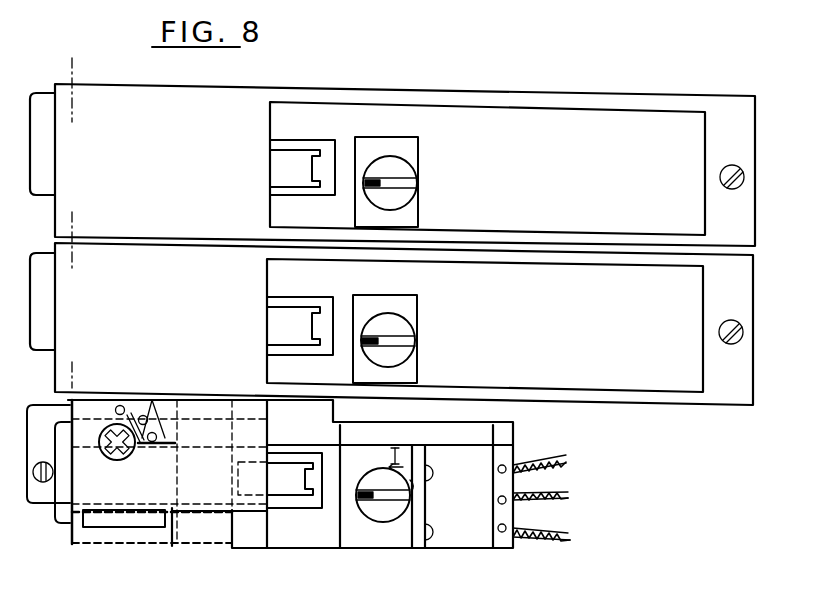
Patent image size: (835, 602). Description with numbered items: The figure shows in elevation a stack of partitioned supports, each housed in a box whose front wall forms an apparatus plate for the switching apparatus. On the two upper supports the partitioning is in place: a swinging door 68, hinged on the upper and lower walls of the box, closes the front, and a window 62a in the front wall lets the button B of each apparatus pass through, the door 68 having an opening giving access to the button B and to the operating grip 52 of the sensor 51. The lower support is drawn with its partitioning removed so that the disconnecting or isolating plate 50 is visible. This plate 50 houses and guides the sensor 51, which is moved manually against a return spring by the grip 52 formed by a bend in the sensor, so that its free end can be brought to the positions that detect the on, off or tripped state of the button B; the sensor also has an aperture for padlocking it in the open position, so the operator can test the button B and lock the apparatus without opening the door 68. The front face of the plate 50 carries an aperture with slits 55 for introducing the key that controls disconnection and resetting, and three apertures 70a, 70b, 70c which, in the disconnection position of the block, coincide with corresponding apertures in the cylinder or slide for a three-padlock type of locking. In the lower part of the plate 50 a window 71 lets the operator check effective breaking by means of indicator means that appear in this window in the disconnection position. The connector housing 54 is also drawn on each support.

The swinging door 68 is at (178, 164).
The connector housing 54 is at (302, 140).
The operating grip 52 is at (308, 175).
The window 62a is at (388, 137).
The button B is at (403, 168).
The sensor 51 is at (319, 474).
The disconnecting or isolating plate 50 is at (158, 492).
The aperture with slits 55 is at (113, 457).
The aperture 70a is at (120, 405).
The aperture 70b is at (152, 400).
The aperture 70c is at (187, 429).
The window 71 is at (113, 528).